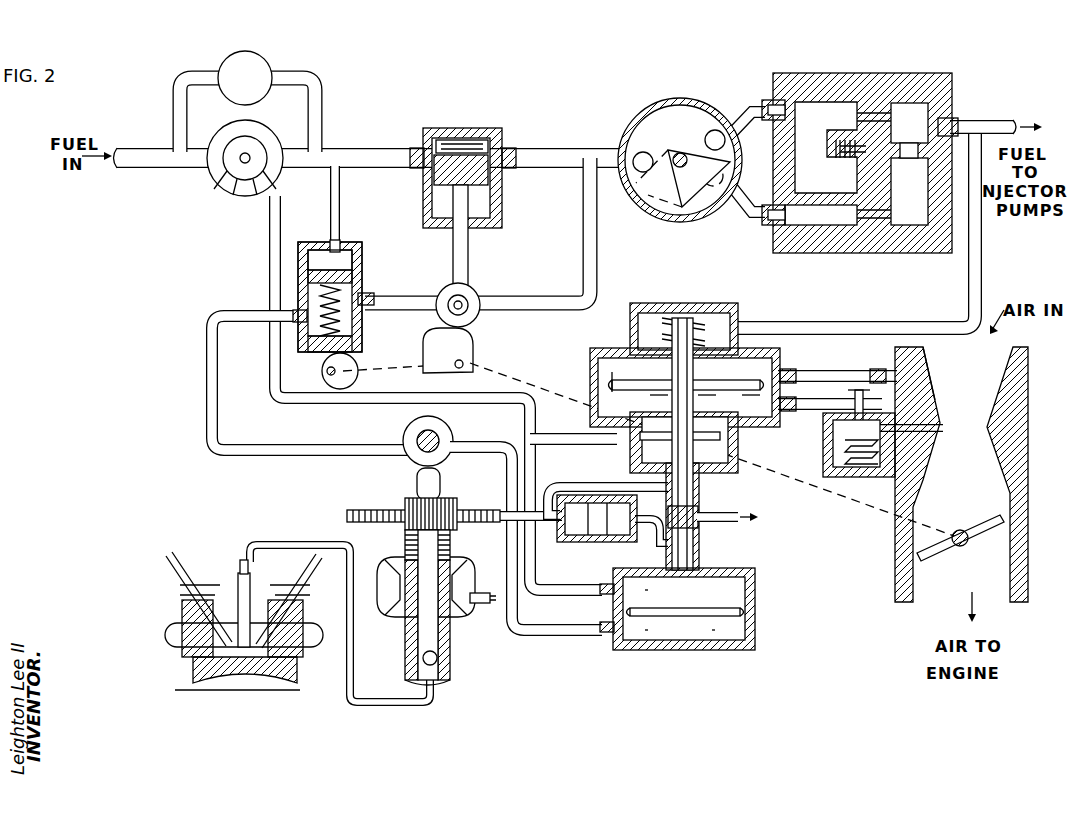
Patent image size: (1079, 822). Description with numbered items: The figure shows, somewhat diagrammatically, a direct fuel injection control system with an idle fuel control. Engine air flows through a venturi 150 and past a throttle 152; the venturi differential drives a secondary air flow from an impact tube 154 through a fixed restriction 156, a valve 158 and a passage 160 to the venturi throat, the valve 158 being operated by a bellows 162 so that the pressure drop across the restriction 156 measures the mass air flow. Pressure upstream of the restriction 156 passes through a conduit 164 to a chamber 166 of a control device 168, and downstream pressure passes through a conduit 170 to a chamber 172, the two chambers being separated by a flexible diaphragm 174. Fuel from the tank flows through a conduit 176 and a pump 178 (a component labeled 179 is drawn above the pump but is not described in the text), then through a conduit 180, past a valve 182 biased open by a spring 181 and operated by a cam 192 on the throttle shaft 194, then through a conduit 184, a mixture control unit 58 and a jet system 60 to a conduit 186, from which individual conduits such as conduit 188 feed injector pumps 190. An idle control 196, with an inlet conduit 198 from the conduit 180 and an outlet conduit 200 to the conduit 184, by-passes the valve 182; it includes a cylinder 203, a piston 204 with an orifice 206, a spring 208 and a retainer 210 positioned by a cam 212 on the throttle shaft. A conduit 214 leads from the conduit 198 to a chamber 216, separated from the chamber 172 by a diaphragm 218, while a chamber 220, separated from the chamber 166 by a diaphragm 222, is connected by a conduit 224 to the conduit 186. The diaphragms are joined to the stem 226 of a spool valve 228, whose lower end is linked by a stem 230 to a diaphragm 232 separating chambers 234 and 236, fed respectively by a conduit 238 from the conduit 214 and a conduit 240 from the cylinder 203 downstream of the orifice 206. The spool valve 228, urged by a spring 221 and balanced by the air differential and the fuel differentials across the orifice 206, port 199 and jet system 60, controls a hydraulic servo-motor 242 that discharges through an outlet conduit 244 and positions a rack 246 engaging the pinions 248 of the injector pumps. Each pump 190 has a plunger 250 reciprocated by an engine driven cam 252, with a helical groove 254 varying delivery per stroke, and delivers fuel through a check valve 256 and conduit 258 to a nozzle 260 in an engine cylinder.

The mixture control unit 58 is at (682, 97).
The jet system 60 is at (847, 78).
The venturi 150 is at (942, 425).
The throttle 152 is at (998, 518).
The impact tube 154 is at (930, 352).
The fixed restriction 156 is at (874, 402).
The valve 158 is at (833, 436).
The passage 160 is at (940, 432).
The bellows 162 is at (833, 464).
The conduit 164 is at (818, 364).
The chamber 166 is at (755, 383).
The control device 168 is at (790, 528).
The conduit 170 is at (832, 400).
The chamber 172 is at (752, 405).
The flexible diaphragm 174 is at (623, 392).
The conduit 176 is at (153, 168).
The pump 178 is at (236, 202).
The pressure regulator 179 is at (252, 54).
The conduit 180 is at (393, 160).
The spring 181 is at (452, 138).
The valve 182 is at (470, 160).
The conduit 184 is at (572, 162).
The conduit 186 is at (1000, 126).
The individual conduit 188 is at (488, 606).
The injector pump 190 is at (394, 633).
The cam 192 is at (425, 345).
The throttle shaft 194 is at (956, 532).
The idle control 196 is at (359, 228).
The inlet conduit 198 is at (340, 199).
The port 199 is at (374, 300).
The outlet conduit 200 is at (584, 236).
The cylinder 203 is at (362, 258).
The piston 204 is at (352, 285).
The orifice 206 is at (330, 259).
The spring 208 is at (352, 324).
The retainer 210 is at (312, 352).
The cam 212 is at (358, 376).
The conduit 214 is at (269, 273).
The chamber 216 is at (722, 448).
The diaphragm 218 is at (663, 395).
The chamber 220 is at (672, 323).
The spring 221 is at (712, 312).
The diaphragm 222 is at (698, 338).
The conduit 224 is at (836, 323).
The stem 226 is at (712, 395).
The spool valve 228 is at (700, 510).
The stem 230 is at (667, 636).
The diaphragm 232 is at (701, 637).
The chamber 234 is at (632, 605).
The chamber 236 is at (639, 637).
The conduit 238 is at (565, 590).
The conduit 240 is at (560, 634).
The hydraulic servo-motor 242 is at (616, 541).
The outlet conduit 244 is at (724, 527).
The rack 246 is at (480, 510).
The pinions 248 is at (406, 508).
The plunger 250 is at (438, 486).
The engine driven cam 252 is at (410, 448).
The helical groove 254 is at (462, 564).
The check valve 256 is at (445, 672).
The conduit 258 is at (375, 704).
The nozzle 260 is at (250, 598).